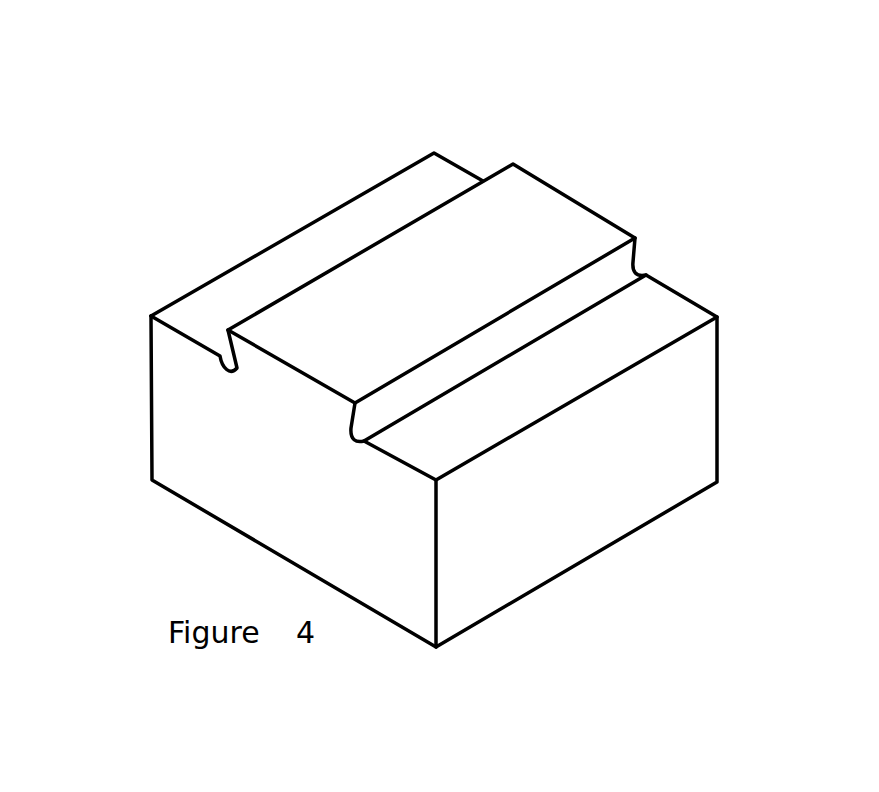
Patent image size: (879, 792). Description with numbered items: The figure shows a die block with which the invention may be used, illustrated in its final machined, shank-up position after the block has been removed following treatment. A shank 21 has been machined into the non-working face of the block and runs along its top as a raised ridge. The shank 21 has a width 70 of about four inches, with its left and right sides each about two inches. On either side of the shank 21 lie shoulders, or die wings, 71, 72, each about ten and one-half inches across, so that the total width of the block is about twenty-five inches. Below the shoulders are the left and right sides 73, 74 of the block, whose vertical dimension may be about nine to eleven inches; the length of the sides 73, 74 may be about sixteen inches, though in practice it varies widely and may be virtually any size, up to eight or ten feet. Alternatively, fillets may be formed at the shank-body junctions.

The shank 21 is at (585, 195).
The width 70 is at (498, 170).
The shoulder 71 is at (377, 207).
The shoulder 72 is at (658, 312).
The left side 73 is at (150, 395).
The right side 74 is at (485, 567).